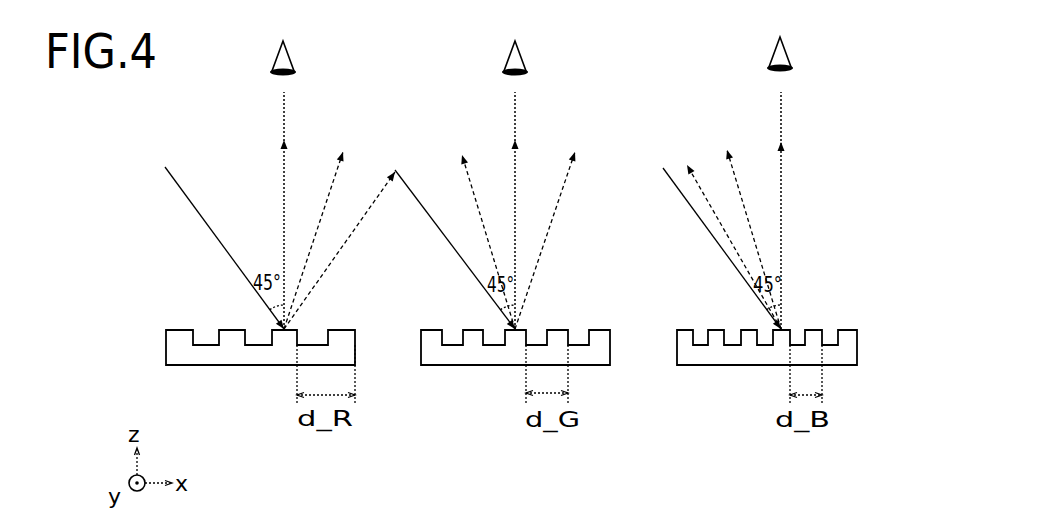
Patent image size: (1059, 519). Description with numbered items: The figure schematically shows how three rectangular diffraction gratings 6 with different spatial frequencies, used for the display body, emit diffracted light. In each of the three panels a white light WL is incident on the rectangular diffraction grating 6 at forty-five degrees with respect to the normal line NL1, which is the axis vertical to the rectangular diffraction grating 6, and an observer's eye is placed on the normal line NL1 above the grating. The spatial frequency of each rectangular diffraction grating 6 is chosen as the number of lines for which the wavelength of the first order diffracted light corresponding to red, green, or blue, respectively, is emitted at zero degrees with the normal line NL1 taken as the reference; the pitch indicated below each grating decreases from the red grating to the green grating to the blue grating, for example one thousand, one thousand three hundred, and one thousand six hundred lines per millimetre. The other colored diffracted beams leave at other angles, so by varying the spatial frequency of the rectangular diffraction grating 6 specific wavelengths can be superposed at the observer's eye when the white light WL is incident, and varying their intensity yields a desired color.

The rectangular diffraction grating 6 is at (194, 356).
The normal line NL1 is at (283, 117).
The white light WL is at (177, 183).